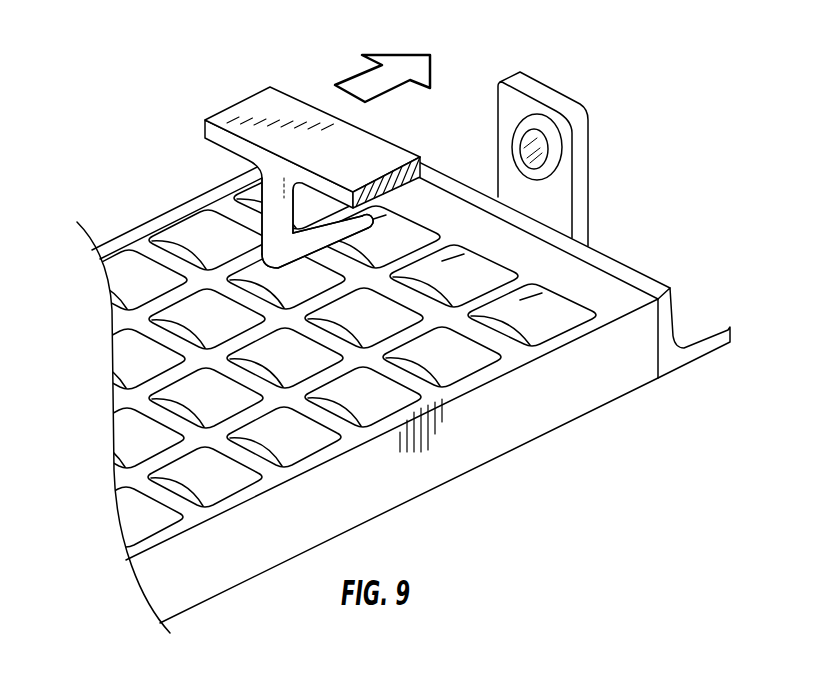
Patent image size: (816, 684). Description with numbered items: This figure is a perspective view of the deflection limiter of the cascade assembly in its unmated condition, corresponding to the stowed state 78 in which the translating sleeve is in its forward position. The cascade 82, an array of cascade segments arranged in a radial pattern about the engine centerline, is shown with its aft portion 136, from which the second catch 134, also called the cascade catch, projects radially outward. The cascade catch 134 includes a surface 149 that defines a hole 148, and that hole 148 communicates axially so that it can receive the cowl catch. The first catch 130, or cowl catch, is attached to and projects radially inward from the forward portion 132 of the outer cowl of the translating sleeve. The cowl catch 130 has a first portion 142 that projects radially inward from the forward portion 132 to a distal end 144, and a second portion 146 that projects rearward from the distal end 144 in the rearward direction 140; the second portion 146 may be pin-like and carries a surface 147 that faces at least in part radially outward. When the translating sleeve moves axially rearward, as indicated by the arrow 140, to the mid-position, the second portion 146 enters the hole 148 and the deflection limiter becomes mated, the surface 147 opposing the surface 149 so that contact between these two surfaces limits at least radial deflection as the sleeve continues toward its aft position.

The stowed state 78 is at (398, 331).
The cascade 82 is at (402, 378).
The first catch 130 is at (287, 182).
The forward portion 132 is at (288, 104).
The second catch 134 is at (589, 148).
The aft portion 136 is at (694, 320).
The rearward direction 140 is at (420, 72).
The first portion 142 is at (275, 216).
The distal end 144 is at (276, 262).
The second portion 146 is at (367, 222).
The surface 147 is at (322, 220).
The hole 148 is at (540, 134).
The surface 149 is at (548, 150).